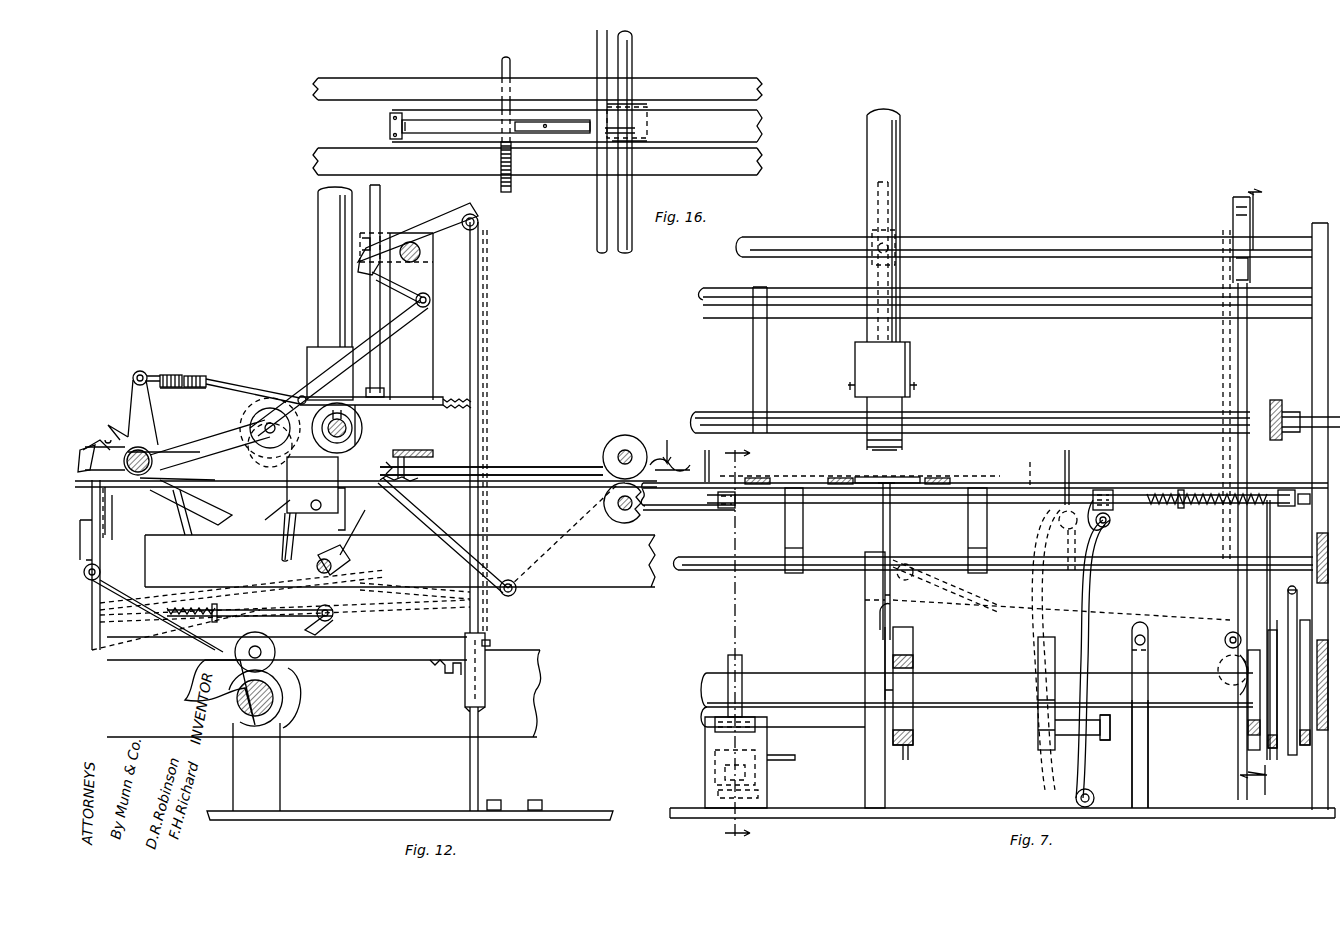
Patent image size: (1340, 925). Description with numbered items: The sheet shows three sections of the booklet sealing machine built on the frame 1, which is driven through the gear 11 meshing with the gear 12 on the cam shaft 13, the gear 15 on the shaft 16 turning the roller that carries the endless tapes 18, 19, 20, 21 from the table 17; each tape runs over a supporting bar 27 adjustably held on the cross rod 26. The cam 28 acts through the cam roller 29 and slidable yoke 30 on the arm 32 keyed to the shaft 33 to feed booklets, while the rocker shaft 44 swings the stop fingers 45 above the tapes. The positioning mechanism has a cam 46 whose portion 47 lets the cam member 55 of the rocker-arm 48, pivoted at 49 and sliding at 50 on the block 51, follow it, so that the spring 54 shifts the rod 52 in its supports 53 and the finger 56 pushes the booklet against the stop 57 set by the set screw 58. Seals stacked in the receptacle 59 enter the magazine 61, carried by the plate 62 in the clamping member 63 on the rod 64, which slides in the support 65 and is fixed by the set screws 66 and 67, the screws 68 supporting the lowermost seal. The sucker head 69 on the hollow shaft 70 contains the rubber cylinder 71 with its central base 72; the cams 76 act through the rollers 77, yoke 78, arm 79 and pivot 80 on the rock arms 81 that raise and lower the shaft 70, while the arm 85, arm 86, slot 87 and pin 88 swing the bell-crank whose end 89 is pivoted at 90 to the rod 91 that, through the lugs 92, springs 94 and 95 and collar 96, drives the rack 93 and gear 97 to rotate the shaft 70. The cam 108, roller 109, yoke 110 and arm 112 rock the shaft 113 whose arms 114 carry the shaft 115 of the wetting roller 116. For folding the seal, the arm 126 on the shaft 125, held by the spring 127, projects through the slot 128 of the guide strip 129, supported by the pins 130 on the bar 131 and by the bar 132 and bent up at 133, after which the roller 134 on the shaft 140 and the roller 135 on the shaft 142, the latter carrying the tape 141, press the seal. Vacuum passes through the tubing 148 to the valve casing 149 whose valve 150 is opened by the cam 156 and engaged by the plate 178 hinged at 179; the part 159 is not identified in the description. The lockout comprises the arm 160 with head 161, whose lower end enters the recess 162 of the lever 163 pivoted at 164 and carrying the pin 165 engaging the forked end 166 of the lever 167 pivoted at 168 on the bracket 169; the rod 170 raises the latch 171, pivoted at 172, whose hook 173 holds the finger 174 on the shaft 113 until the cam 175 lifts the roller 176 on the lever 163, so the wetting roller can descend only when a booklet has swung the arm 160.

In FIG. 12, the frame 1 is at (620, 575).
In FIG. 7, the frame 1 is at (1312, 352).
In FIG. 7, the gear 11 is at (1264, 483).
In FIG. 12, the gear 12 is at (318, 620).
In FIG. 12, the cam shaft 13 is at (333, 610).
In FIG. 7, the cam shaft 13 is at (948, 715).
In FIG. 12, the gear 15 is at (355, 540).
In FIG. 12, the shaft 16 is at (382, 462).
In FIG. 7, the shaft 16 is at (676, 447).
In FIG. 12, the table or shelf 17 is at (333, 556).
In FIG. 12, the endless tape 18 is at (570, 458).
In FIG. 7, the endless tape 18 is at (1017, 465).
In FIG. 16, the endless tape 19 is at (313, 162).
In FIG. 12, the endless tape 19 is at (281, 553).
In FIG. 7, the endless tape 19 is at (945, 477).
In FIG. 16, the endless tape 20 is at (313, 92).
In FIG. 7, the endless tape 20 is at (840, 477).
In FIG. 7, the endless tape 21 is at (757, 477).
In FIG. 12, the cross rod 26 is at (112, 505).
In FIG. 12, the supporting bar 27 is at (268, 490).
In FIG. 7, the supporting bar 27 is at (790, 476).
In FIG. 7, the cam 28 is at (1305, 746).
In FIG. 7, the cam roller 29 is at (1300, 612).
In FIG. 7, the slidable yoke 30 is at (1280, 750).
In FIG. 12, the arm 32 is at (98, 434).
In FIG. 12, the shaft 33 is at (150, 452).
In FIG. 7, the rocker shaft 44 is at (722, 571).
In FIG. 7, the stop fingers 45 is at (803, 542).
In FIG. 7, the cam 46 is at (1038, 637).
In FIG. 7, the cam portion 47 is at (1036, 640).
In FIG. 7, the rocker-arm 48 is at (1069, 561).
In FIG. 7, the pivot 49 is at (1076, 795).
In FIG. 7, the sliding engagement 50 is at (1065, 517).
In FIG. 7, the block 51 is at (1103, 490).
In FIG. 12, the slidable rod 52 is at (301, 536).
In FIG. 7, the slidable rod 52 is at (1137, 493).
In FIG. 12, the supports 53 is at (340, 505).
In FIG. 7, the supports 53 is at (725, 508).
In FIG. 7, the spring 54 is at (1200, 493).
In FIG. 7, the cam member 55 is at (1106, 740).
In FIG. 12, the finger 56 is at (271, 515).
In FIG. 7, the finger 56 is at (1065, 460).
In FIG. 7, the adjustable stop member 57 is at (704, 457).
In FIG. 7, the set screw 58 is at (690, 470).
In FIG. 7, the receptacle 59 is at (896, 205).
In FIG. 7, the magazine 61 is at (912, 358).
In FIG. 12, the plate 62 is at (396, 398).
In FIG. 12, the U-shaped clamping member 63 is at (447, 398).
In FIG. 12, the rod 64 is at (381, 365).
In FIG. 7, the rod 64 is at (878, 272).
In FIG. 12, the support 65 is at (384, 235).
In FIG. 7, the support 65 is at (872, 233).
In FIG. 12, the set screw 66 is at (364, 236).
In FIG. 12, the set screw 67 is at (384, 425).
In FIG. 12, the screws 68 is at (302, 396).
In FIG. 7, the screws 68 is at (848, 385).
In FIG. 12, the sucker head 69 is at (352, 430).
In FIG. 12, the hollow shaft 70 is at (362, 425).
In FIG. 7, the hollow shaft 70 is at (1050, 412).
In FIG. 12, the resilient cylinder 71 is at (327, 427).
In FIG. 12, the central base 72 is at (342, 418).
In FIG. 7, the cams 76 is at (1268, 745).
In FIG. 7, the roller 77 is at (1281, 681).
In FIG. 7, the yoke 78 is at (1244, 729).
In FIG. 7, the arm 79 is at (1272, 530).
In FIG. 7, the pivot connection 80 is at (1295, 420).
In FIG. 12, the rock arm 81 is at (215, 443).
In FIG. 7, the rock arm 81 is at (1278, 400).
In FIG. 12, the arm 85 is at (183, 526).
In FIG. 12, the bell-crank arm 86 is at (222, 522).
In FIG. 12, the slot 87 is at (212, 492).
In FIG. 12, the pin 88 is at (165, 460).
In FIG. 12, the bell-crank end 89 is at (132, 410).
In FIG. 12, the pivot 90 is at (133, 377).
In FIG. 12, the rod 91 is at (152, 375).
In FIG. 12, the lugs 92 is at (220, 380).
In FIG. 12, the rack 93 is at (256, 392).
In FIG. 12, the spring 94 is at (183, 389).
In FIG. 12, the spring 95 is at (197, 376).
In FIG. 12, the collar 96 is at (174, 375).
In FIG. 12, the gear 97 is at (312, 485).
In FIG. 7, the cam 108 is at (1248, 718).
In FIG. 7, the roller 109 is at (1230, 675).
In FIG. 7, the yoke 110 is at (1235, 630).
In FIG. 7, the arm 112 is at (1252, 352).
In FIG. 12, the rock shaft 113 is at (430, 300).
In FIG. 7, the rock shaft 113 is at (1105, 282).
In FIG. 12, the arms 114 is at (392, 327).
In FIG. 7, the arms 114 is at (753, 373).
In FIG. 12, the shaft 115 is at (252, 440).
In FIG. 7, the shaft 115 is at (1145, 412).
In FIG. 12, the wetting roller 116 is at (252, 410).
In FIG. 7, the wetting roller 116 is at (867, 440).
In FIG. 16, the shaft 125 is at (501, 67).
In FIG. 12, the shaft 125 is at (507, 596).
In FIG. 16, the arm 126 is at (475, 118).
In FIG. 12, the arm 126 is at (488, 566).
In FIG. 16, the spring 127 is at (511, 182).
In FIG. 16, the slot 128 is at (545, 122).
In FIG. 16, the guide strip 129 is at (548, 142).
In FIG. 12, the guide strip 129 is at (583, 474).
In FIG. 16, the depending pins 130 is at (390, 126).
In FIG. 12, the depending pins 130 is at (413, 442).
In FIG. 12, the bar 131 is at (433, 450).
In FIG. 16, the transverse bar 132 is at (597, 57).
In FIG. 12, the bent-up end 133 is at (390, 488).
In FIG. 12, the pressing roller 134 is at (612, 440).
In FIG. 16, the roller 135 is at (642, 107).
In FIG. 12, the roller 135 is at (615, 515).
In FIG. 12, the shaft 140 is at (628, 450).
In FIG. 16, the endless tape 141 is at (732, 128).
In FIG. 16, the shaft 142 is at (632, 58).
In FIG. 7, the flexible tubing 148 is at (795, 755).
In FIG. 7, the valve casing 149 is at (705, 755).
In FIG. 7, the valve 150 is at (760, 794).
In FIG. 7, the cam 156 is at (742, 660).
In FIG. 12, the post 159 is at (480, 775).
In FIG. 12, the pivoted arm 160 is at (100, 565).
In FIG. 7, the pivoted arm 160 is at (886, 540).
In FIG. 12, the head 161 is at (106, 458).
In FIG. 7, the head 161 is at (900, 477).
In FIG. 12, the recess 162 is at (157, 616).
In FIG. 12, the lever 163 is at (405, 582).
In FIG. 7, the lever 163 is at (895, 620).
In FIG. 12, the pivot 164 is at (176, 630).
In FIG. 7, the pivot 164 is at (870, 628).
In FIG. 12, the pin 165 is at (490, 643).
In FIG. 7, the forked end 166 is at (905, 560).
In FIG. 12, the lever 167 is at (468, 640).
In FIG. 7, the lever 167 is at (978, 632).
In FIG. 12, the pivot 168 is at (465, 645).
In FIG. 7, the pivot 168 is at (1143, 632).
In FIG. 7, the bracket 169 is at (1148, 765).
In FIG. 12, the vertically extending rod 170 is at (486, 333).
In FIG. 7, the vertically extending rod 170 is at (1224, 386).
In FIG. 12, the latch-member 171 is at (440, 228).
In FIG. 7, the latch-member 171 is at (1250, 215).
In FIG. 12, the pivot 172 is at (412, 242).
In FIG. 7, the pivot 172 is at (1052, 236).
In FIG. 12, the hook-like projection 173 is at (358, 277).
In FIG. 7, the hook-like projection 173 is at (1250, 275).
In FIG. 12, the finger 174 is at (405, 287).
In FIG. 12, the cam 175 is at (228, 708).
In FIG. 7, the cam 175 is at (917, 756).
In FIG. 12, the roller 176 is at (276, 648).
In FIG. 7, the roller 176 is at (893, 662).
In FIG. 12, the plate 178 is at (518, 466).
In FIG. 7, the hinge 179 is at (715, 723).